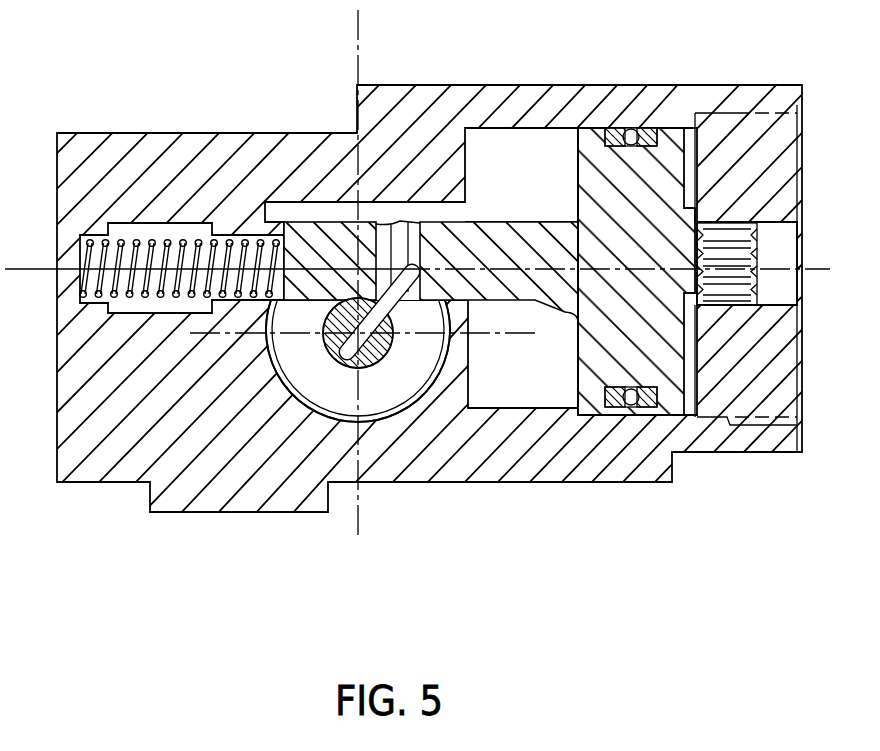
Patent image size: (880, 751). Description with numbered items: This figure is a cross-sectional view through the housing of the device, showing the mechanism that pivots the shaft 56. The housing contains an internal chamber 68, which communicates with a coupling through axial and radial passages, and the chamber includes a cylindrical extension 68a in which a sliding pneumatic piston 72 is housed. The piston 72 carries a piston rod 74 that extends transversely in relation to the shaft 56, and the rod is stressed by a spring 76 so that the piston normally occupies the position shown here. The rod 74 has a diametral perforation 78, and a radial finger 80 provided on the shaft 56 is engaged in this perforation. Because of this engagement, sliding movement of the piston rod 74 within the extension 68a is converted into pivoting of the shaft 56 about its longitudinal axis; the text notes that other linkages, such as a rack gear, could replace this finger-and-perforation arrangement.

The shaft 56 is at (388, 350).
The internal chamber 68 is at (345, 410).
The cylindrical extension 68a is at (530, 140).
The pneumatic piston 72 is at (665, 135).
The piston rod 74 is at (438, 197).
The spring 76 is at (143, 243).
The diametral perforation 78 is at (385, 225).
The radial finger 80 is at (420, 335).